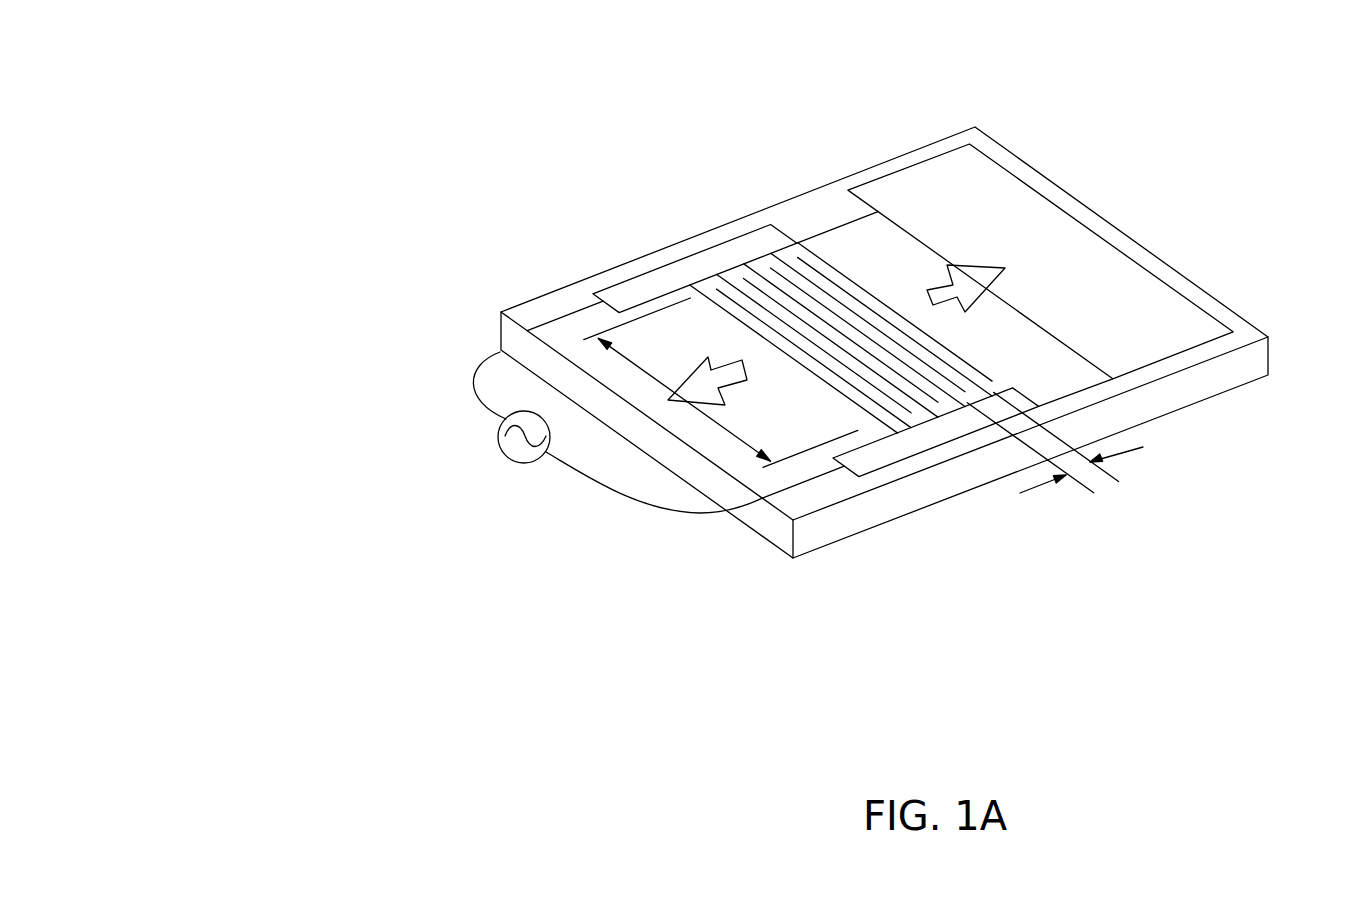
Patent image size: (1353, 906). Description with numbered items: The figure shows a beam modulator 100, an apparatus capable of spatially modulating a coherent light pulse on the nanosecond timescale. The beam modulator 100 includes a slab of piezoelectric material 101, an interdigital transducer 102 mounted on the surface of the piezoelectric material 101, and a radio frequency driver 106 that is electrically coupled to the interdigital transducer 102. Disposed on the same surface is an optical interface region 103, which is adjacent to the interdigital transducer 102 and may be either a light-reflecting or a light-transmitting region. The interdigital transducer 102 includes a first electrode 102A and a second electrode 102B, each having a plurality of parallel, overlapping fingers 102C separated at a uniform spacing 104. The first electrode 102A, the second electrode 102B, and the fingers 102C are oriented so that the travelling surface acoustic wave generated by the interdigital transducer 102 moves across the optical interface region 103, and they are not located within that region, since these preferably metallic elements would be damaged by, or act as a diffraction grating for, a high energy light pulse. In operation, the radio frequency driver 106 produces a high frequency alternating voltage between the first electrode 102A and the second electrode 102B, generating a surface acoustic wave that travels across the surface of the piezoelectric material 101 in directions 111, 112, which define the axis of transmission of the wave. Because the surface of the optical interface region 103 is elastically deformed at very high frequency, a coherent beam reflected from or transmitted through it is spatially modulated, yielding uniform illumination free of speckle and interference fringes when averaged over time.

The beam modulator 100 is at (378, 128).
The piezoelectric material 101 is at (667, 448).
The interdigital transducer 102 is at (570, 240).
The first electrode 102A is at (693, 263).
The second electrode 102B is at (1037, 405).
The fingers 102C is at (840, 250).
The optical interface region 103 is at (1120, 298).
The uniform spacing 104 is at (1122, 480).
The radio frequency driver 106 is at (498, 446).
The direction 111 is at (951, 267).
The direction 112 is at (738, 382).